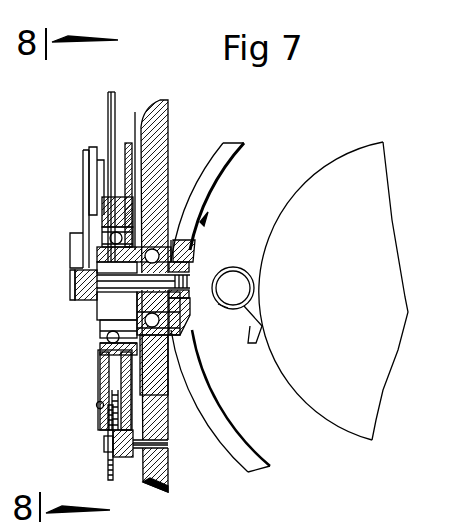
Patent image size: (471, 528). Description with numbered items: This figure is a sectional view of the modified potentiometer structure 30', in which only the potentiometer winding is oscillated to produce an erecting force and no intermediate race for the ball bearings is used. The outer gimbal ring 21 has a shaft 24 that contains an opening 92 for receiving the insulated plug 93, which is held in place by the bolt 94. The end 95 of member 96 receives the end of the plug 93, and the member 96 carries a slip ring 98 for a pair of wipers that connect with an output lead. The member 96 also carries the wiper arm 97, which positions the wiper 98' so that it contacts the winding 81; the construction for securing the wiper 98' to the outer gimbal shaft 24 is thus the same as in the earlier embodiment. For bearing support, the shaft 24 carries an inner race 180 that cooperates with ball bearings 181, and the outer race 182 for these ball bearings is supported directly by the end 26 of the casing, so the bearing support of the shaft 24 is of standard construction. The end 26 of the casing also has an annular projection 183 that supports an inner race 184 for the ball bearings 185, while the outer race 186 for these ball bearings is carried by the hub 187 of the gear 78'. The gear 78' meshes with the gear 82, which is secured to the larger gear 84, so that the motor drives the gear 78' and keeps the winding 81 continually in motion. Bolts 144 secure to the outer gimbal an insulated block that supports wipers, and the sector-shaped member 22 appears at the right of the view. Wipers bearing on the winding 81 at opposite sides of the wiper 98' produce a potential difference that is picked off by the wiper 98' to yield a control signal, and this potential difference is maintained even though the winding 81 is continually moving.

The outer gimbal ring 21 is at (204, 220).
The sector member 22 is at (312, 402).
The shaft 24 is at (190, 268).
The end of the casing 26 is at (160, 146).
The modified potentiometer structure 30' is at (77, 154).
The gear 78' is at (138, 172).
The winding 81 is at (98, 404).
The gear 82 is at (125, 460).
The larger gear 84 is at (107, 468).
The opening 92 is at (189, 279).
The insulated plug 93 is at (117, 306).
The bolt 94 is at (191, 316).
The end of member 96 95 is at (117, 268).
The member 96 is at (74, 302).
The wiper arm 97 is at (86, 196).
The slip ring 98 is at (113, 285).
The wiper 98' is at (101, 177).
The bolts 144 is at (258, 288).
The inner race 180 is at (190, 252).
The ball bearings 181 is at (172, 240).
The outer race 182 is at (154, 248).
The annular projection 183 is at (103, 325).
The inner race 184 is at (153, 334).
The ball bearings 185 is at (100, 352).
The outer race 186 is at (156, 365).
The hub 187 is at (100, 220).